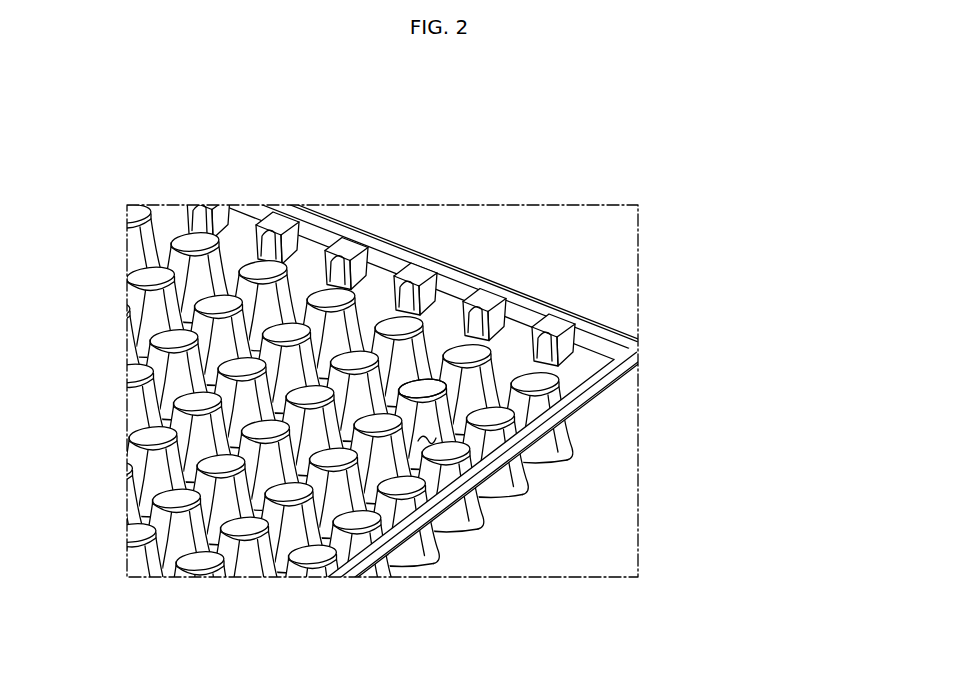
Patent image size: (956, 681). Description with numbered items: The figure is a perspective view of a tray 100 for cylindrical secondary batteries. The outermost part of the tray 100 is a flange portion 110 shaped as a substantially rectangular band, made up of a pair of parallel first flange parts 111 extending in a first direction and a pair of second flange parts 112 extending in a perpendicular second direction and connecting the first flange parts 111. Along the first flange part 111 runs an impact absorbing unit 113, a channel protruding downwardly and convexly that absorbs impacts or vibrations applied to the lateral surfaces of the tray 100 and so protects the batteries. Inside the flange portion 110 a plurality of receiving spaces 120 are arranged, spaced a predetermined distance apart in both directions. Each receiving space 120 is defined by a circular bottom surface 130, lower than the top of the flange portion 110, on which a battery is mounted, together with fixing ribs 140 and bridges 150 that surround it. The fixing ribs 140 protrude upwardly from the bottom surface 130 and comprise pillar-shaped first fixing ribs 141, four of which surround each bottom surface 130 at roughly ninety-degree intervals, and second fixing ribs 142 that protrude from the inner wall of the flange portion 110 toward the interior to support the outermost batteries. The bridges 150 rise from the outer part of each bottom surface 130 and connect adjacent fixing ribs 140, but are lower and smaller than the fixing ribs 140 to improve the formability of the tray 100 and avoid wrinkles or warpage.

The tray 100 is at (109, 113).
The flange portion 110 is at (435, 150).
The first flange part 111 is at (526, 326).
The second flange part 112 is at (395, 257).
The impact absorbing unit 113 is at (528, 423).
The receiving space 120 is at (420, 418).
The bottom surface 130 is at (408, 440).
The fixing rib 140 is at (740, 305).
The first fixing rib 141 is at (432, 387).
The second fixing rib 142 is at (560, 321).
The bridge 150 is at (454, 438).